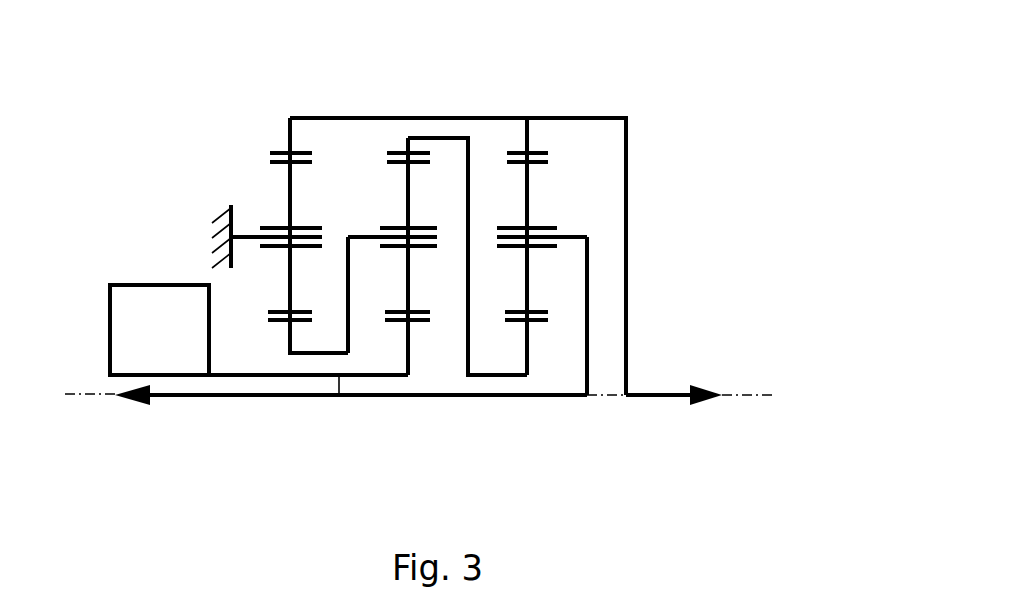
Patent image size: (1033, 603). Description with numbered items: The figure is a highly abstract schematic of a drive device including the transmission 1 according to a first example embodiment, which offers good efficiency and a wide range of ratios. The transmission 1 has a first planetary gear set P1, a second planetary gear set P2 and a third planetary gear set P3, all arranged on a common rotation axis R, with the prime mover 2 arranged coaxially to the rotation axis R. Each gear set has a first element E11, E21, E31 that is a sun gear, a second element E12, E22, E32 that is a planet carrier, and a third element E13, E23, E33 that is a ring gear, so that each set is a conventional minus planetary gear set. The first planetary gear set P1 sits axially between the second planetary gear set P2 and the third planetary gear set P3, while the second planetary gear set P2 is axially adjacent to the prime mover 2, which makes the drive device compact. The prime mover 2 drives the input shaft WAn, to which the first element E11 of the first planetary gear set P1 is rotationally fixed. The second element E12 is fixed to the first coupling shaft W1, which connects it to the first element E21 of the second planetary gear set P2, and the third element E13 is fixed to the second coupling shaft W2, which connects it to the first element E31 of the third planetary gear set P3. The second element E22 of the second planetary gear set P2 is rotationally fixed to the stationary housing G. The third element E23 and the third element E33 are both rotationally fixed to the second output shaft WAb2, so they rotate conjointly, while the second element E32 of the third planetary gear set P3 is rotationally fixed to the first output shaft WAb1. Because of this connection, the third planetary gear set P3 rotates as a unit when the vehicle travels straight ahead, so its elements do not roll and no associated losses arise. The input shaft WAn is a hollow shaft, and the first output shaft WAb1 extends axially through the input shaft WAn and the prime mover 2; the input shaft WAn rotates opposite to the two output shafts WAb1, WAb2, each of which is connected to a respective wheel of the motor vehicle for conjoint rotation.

The transmission 1 is at (142, 82).
The prime mover 2 is at (132, 292).
The housing G is at (216, 219).
The first planetary gear set P1 is at (403, 403).
The second planetary gear set P2 is at (287, 403).
The third planetary gear set P3 is at (538, 99).
The first coupling shaft W1 is at (348, 235).
The second coupling shaft W2 is at (517, 375).
The first element of the first planetary gear set E11 is at (413, 335).
The second element of the first planetary gear set E12 is at (437, 237).
The third element of the first planetary gear set E13 is at (409, 148).
The first element of the second planetary gear set E21 is at (281, 324).
The second element of the second planetary gear set E22 is at (248, 236).
The third element of the second planetary gear set E23 is at (289, 140).
The first element of the third planetary gear set E31 is at (527, 355).
The second element of the third planetary gear set E32 is at (587, 237).
The third element of the third planetary gear set E33 is at (527, 140).
The input shaft WAn is at (340, 397).
The first output shaft WAb1 is at (180, 397).
The second output shaft WAb2 is at (661, 397).
The rotation axis R is at (745, 397).